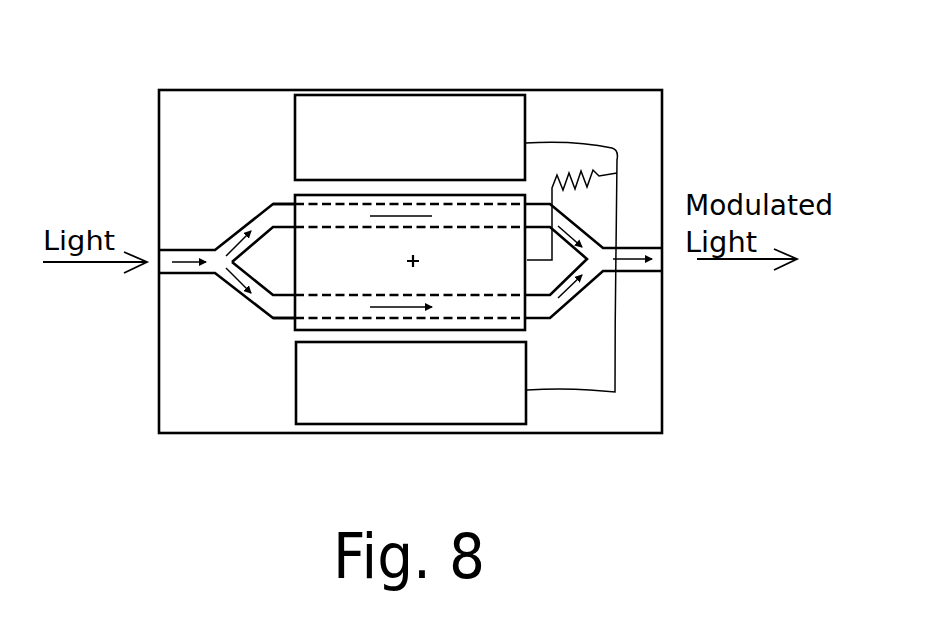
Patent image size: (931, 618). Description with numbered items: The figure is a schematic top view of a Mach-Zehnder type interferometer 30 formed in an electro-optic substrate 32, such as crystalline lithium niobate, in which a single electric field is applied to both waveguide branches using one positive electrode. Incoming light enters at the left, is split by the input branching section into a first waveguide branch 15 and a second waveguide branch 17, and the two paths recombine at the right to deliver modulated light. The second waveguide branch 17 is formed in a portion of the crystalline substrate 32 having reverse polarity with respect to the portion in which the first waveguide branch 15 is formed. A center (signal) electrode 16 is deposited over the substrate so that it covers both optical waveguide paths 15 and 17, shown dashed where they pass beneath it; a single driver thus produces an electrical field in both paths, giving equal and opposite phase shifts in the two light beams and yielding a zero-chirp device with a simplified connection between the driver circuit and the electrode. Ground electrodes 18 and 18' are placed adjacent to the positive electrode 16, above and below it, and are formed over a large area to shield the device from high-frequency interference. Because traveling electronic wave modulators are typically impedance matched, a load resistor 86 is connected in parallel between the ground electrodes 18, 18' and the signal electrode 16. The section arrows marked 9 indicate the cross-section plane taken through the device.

The electro-optic substrate 32 is at (212, 411).
The ground electrode 18 is at (392, 137).
The ground electrode 18' is at (392, 383).
The center (signal) electrode 16 is at (305, 262).
The Mach-Zehnder type interferometer 30 is at (246, 189).
The first waveguide branch 15 is at (285, 205).
The second waveguide branch 17 is at (284, 318).
The load (resistor) 86 is at (571, 267).
The section line 9- 9 is at (418, 77).